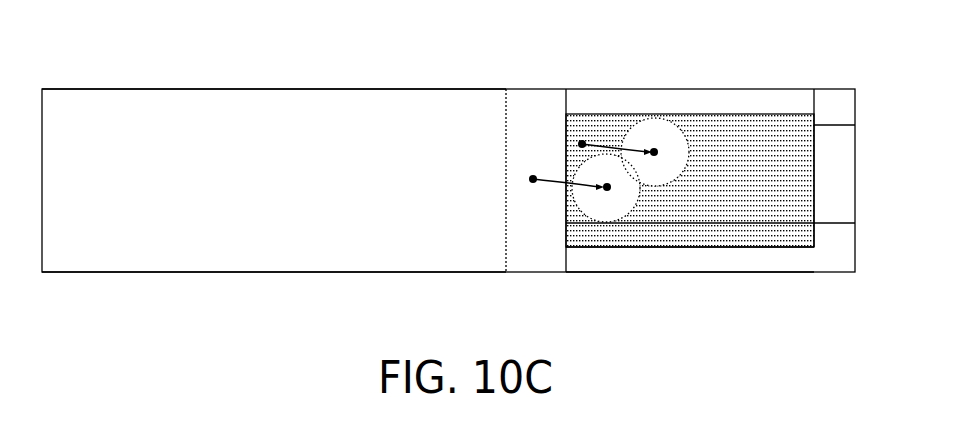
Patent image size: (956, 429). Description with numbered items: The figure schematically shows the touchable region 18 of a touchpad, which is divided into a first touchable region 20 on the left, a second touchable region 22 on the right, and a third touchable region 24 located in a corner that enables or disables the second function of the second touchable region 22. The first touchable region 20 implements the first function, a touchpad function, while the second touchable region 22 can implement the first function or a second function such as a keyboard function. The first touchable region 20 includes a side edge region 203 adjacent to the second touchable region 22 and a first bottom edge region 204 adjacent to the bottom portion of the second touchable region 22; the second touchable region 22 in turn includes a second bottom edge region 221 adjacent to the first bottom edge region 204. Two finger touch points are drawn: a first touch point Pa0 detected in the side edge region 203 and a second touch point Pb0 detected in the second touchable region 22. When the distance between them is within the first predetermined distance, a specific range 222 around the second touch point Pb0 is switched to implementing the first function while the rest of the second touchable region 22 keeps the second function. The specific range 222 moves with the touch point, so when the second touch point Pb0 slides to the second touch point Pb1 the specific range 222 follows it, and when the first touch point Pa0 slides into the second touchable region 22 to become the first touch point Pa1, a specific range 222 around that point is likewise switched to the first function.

The touchable region 18 is at (360, 89).
The first touchable region 20 is at (440, 103).
The side edge region 203 is at (536, 96).
The second touchable region 22 is at (738, 113).
The specific range 222 is at (684, 138).
The second bottom edge region 221 is at (745, 242).
The first bottom edge region 204 is at (655, 258).
The third touchable region 24 is at (830, 103).
The first touch point Pa0 is at (533, 184).
The first touch point Pa1 is at (607, 192).
The second touch point Pb0 is at (582, 140).
The second touch point Pb1 is at (654, 148).